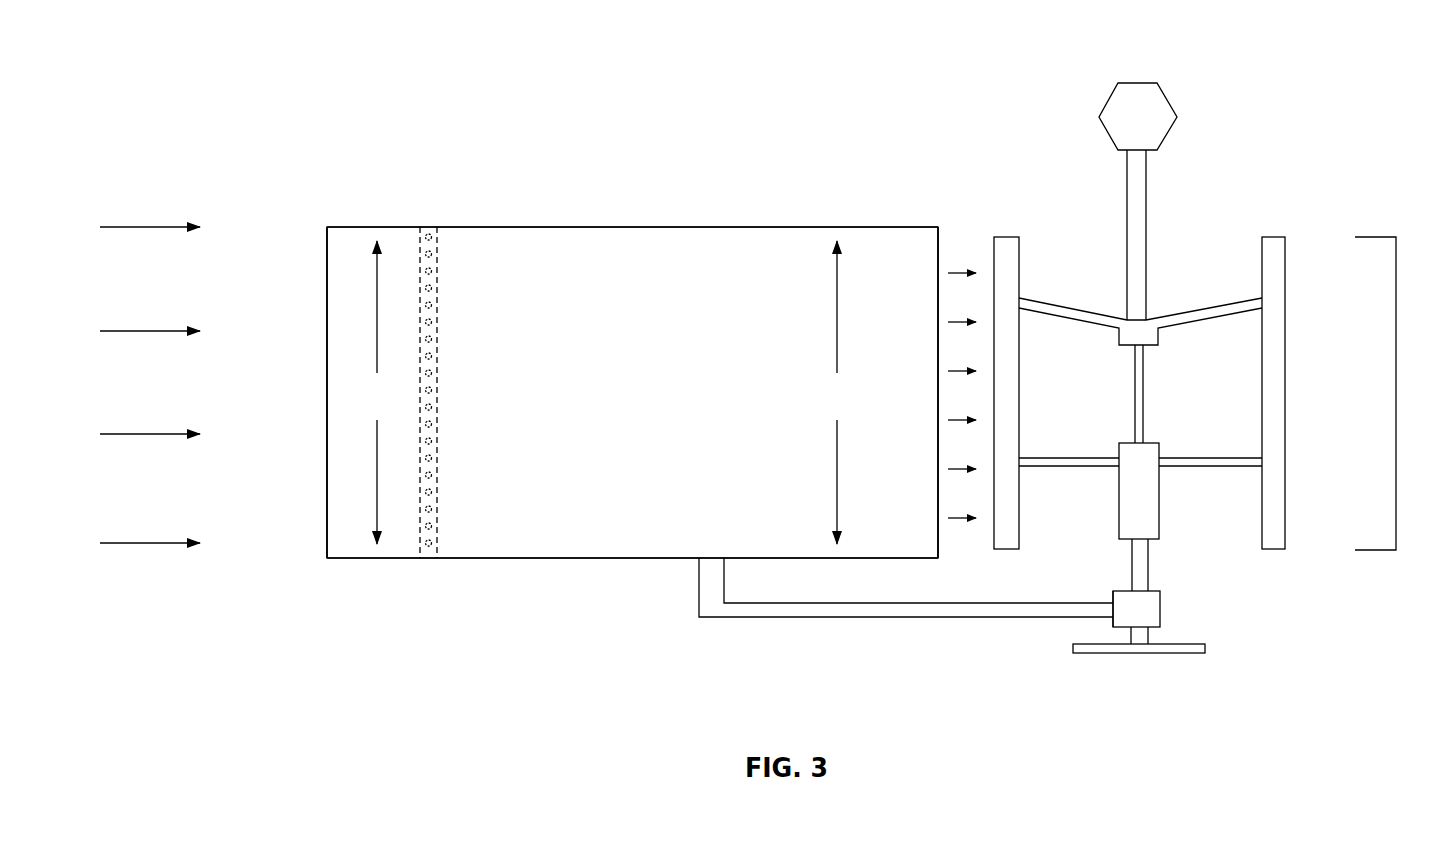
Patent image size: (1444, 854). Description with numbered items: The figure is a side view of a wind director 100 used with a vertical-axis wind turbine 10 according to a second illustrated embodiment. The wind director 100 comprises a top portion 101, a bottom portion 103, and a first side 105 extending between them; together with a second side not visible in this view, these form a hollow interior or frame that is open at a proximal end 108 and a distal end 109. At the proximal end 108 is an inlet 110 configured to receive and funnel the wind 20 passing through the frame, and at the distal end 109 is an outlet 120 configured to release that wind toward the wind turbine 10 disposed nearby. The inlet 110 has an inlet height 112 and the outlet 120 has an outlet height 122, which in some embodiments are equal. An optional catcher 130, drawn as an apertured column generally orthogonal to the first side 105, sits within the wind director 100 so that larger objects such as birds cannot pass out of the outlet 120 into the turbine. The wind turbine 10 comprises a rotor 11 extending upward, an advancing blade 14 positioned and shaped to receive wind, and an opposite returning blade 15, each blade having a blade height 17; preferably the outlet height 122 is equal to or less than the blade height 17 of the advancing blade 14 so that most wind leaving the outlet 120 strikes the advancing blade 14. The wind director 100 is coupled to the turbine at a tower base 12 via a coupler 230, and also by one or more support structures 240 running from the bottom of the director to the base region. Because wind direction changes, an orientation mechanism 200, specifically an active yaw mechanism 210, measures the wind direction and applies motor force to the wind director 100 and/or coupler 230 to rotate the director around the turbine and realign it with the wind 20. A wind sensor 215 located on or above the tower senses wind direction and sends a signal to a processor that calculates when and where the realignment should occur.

The wind turbine 10 is at (1288, 57).
The wind 20 is at (134, 196).
The wind director 100 is at (417, 177).
The top portion 101 is at (640, 227).
The bottom portion 103 is at (548, 559).
The first side 105 is at (655, 407).
The proximal end 108 is at (327, 445).
The distal end 109 is at (938, 470).
The inlet 110 is at (327, 333).
The inlet height 112 is at (382, 392).
The outlet 120 is at (938, 333).
The outlet height 122 is at (840, 392).
The catcher 130 is at (428, 302).
The support structure 240 is at (790, 618).
The advancing blade 14 is at (1003, 237).
The returning blade 15 is at (1285, 397).
The blade height 17 is at (1396, 393).
The wind sensor 215 is at (1108, 101).
The rotor 11 is at (1144, 395).
The orientation mechanism 200 is at (1160, 598).
The coupler 230 is at (1120, 600).
The active yaw mechanism 210 is at (1160, 612).
The tower base 12 is at (1140, 653).